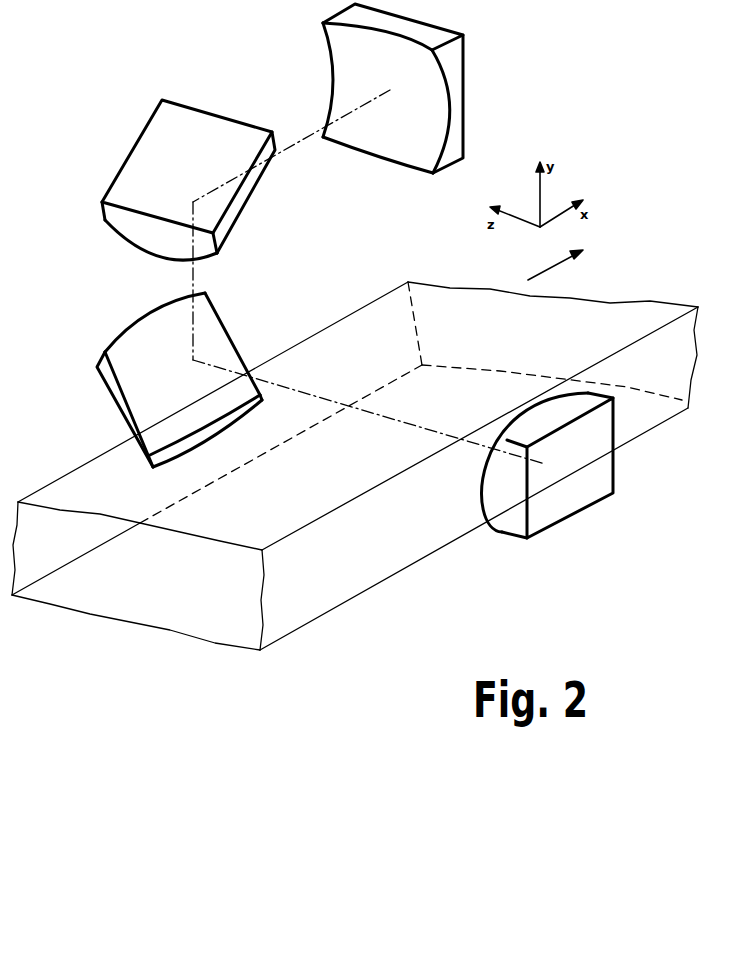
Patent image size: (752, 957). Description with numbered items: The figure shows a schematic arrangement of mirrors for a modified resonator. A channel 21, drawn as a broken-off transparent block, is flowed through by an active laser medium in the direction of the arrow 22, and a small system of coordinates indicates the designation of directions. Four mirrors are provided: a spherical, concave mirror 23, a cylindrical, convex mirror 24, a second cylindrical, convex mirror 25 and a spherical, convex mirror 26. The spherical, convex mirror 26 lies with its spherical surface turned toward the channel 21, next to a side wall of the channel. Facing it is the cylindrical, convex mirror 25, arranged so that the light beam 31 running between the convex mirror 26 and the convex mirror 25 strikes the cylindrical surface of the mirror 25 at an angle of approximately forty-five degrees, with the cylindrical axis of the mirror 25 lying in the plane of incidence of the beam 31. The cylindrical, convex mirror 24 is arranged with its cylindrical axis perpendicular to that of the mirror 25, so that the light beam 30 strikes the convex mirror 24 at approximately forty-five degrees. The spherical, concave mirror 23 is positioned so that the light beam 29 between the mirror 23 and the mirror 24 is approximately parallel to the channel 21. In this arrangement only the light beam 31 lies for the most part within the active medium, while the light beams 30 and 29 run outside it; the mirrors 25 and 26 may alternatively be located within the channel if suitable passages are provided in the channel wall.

The channel 21 is at (385, 308).
The arrow 22 is at (547, 268).
The spherical, concave mirror 23 is at (458, 95).
The cylindrical, convex mirror 24 is at (155, 132).
The second cylindrical, convex mirror 25 is at (118, 387).
The spherical, convex mirror 26 is at (572, 487).
The light beam 29 is at (300, 140).
The light beam 30 is at (190, 270).
The light beam 31 is at (367, 412).